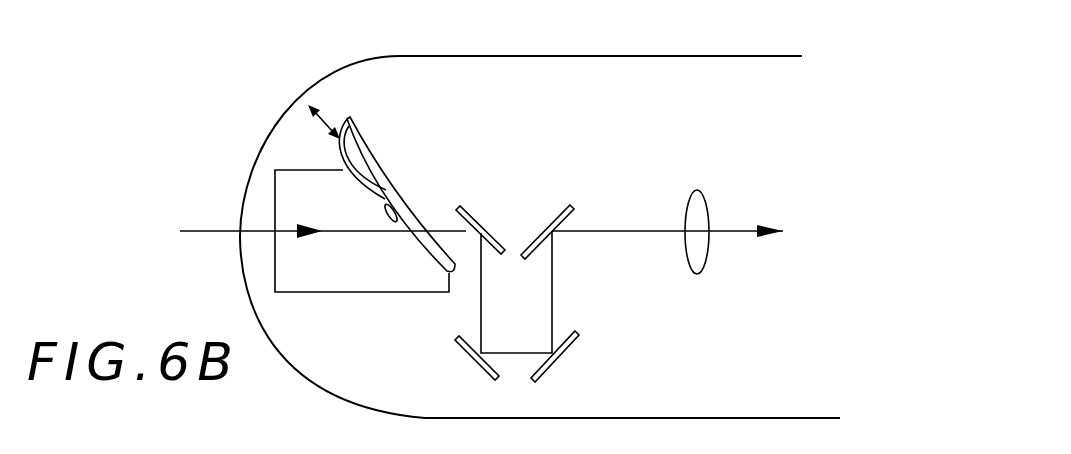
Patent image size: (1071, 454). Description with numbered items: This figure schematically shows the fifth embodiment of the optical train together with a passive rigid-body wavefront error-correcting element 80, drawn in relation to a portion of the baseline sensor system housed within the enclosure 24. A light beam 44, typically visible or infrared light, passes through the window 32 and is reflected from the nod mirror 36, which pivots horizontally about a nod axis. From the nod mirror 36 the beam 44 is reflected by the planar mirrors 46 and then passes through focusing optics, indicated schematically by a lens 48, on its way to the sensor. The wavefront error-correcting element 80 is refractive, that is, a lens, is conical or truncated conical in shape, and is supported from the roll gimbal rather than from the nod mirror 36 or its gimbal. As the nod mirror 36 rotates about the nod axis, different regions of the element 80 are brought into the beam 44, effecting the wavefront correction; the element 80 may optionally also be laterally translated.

The housing 24 is at (581, 47).
The curved window 32 is at (280, 117).
The light source 36 is at (322, 293).
The light beam 44 is at (198, 231).
The mirror 46 is at (476, 194).
The lens 48 is at (703, 268).
The tilting mirror 80 is at (358, 140).